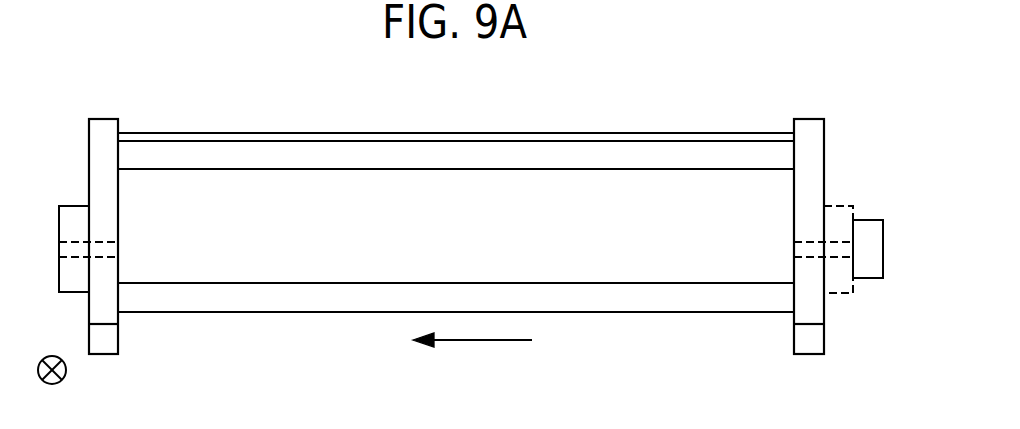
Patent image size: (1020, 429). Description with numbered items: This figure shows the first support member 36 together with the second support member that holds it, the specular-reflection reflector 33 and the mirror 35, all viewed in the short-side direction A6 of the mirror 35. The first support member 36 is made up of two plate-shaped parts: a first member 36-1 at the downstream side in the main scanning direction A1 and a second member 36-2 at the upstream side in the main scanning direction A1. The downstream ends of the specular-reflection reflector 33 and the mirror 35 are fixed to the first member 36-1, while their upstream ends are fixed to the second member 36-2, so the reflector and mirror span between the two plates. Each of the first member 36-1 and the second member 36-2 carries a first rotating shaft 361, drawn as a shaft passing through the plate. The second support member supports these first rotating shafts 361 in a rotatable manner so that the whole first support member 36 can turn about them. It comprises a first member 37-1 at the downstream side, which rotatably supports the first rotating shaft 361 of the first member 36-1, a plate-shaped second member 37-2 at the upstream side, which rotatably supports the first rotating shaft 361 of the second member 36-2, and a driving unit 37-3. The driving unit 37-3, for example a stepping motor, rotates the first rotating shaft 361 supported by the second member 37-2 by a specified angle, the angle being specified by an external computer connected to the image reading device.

The specular-reflection reflector 33 is at (618, 133).
The mirror 35 is at (470, 283).
The first support member 36 is at (487, 203).
The first member 36-1 is at (100, 118).
The second member 36-2 is at (847, 102).
The first member 37-1 is at (68, 205).
The second member 37-2 is at (880, 190).
The driving unit 37-3 is at (873, 280).
The first rotating shaft 361 is at (112, 250).
The main scanning direction A1 is at (472, 359).
The short-side direction A6 is at (54, 349).